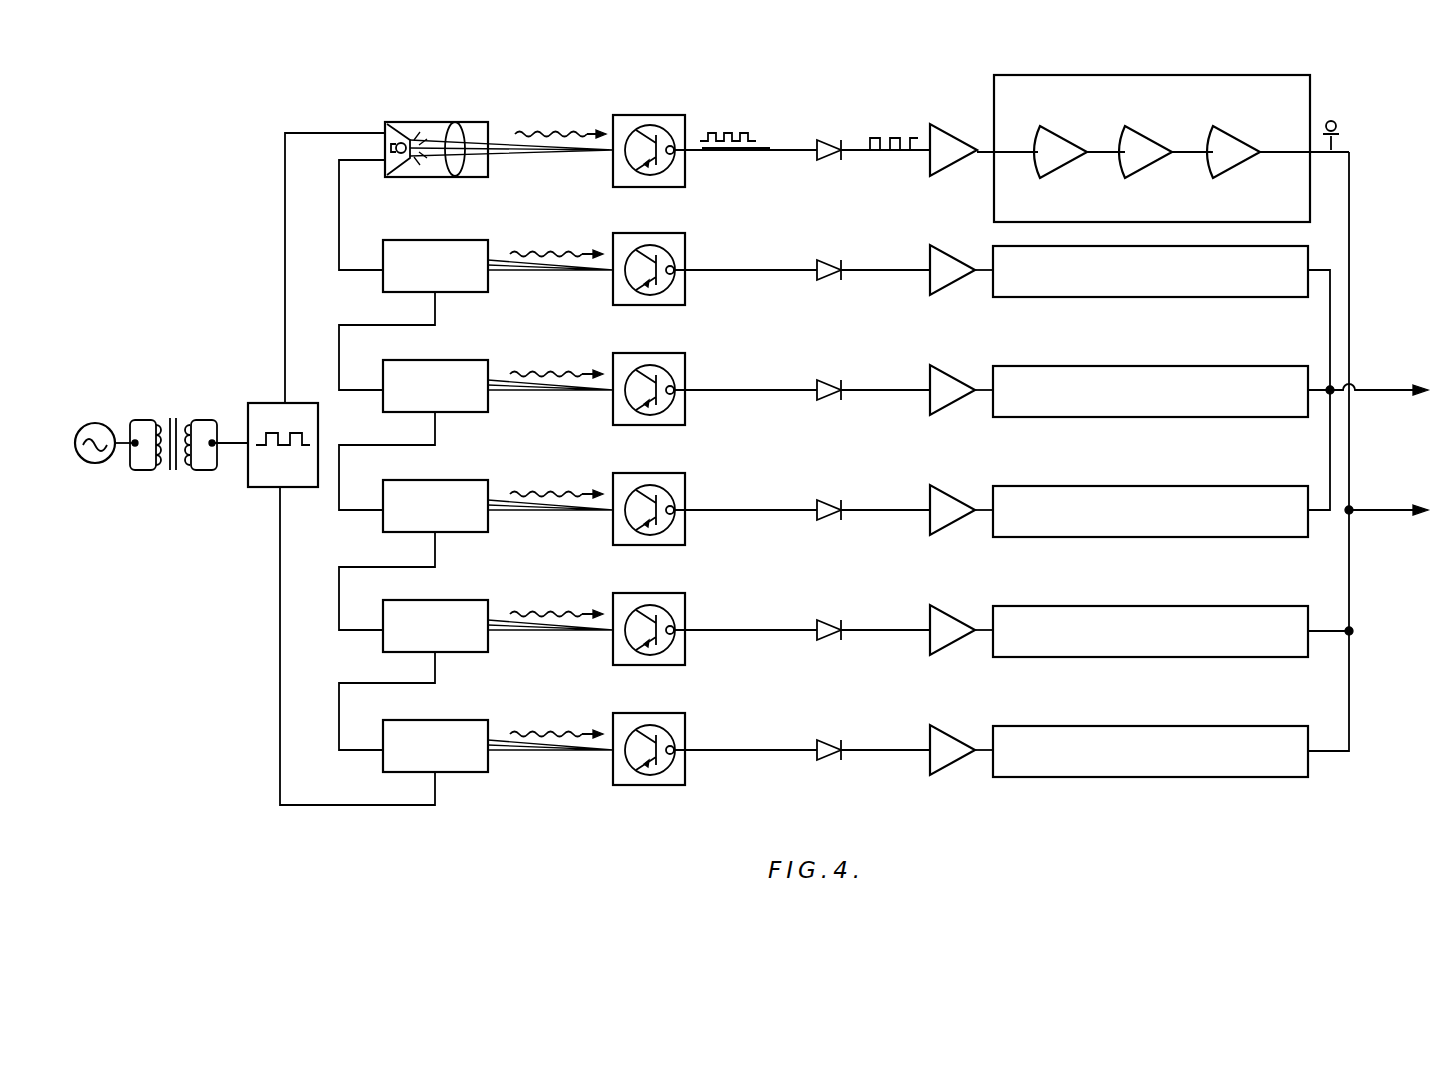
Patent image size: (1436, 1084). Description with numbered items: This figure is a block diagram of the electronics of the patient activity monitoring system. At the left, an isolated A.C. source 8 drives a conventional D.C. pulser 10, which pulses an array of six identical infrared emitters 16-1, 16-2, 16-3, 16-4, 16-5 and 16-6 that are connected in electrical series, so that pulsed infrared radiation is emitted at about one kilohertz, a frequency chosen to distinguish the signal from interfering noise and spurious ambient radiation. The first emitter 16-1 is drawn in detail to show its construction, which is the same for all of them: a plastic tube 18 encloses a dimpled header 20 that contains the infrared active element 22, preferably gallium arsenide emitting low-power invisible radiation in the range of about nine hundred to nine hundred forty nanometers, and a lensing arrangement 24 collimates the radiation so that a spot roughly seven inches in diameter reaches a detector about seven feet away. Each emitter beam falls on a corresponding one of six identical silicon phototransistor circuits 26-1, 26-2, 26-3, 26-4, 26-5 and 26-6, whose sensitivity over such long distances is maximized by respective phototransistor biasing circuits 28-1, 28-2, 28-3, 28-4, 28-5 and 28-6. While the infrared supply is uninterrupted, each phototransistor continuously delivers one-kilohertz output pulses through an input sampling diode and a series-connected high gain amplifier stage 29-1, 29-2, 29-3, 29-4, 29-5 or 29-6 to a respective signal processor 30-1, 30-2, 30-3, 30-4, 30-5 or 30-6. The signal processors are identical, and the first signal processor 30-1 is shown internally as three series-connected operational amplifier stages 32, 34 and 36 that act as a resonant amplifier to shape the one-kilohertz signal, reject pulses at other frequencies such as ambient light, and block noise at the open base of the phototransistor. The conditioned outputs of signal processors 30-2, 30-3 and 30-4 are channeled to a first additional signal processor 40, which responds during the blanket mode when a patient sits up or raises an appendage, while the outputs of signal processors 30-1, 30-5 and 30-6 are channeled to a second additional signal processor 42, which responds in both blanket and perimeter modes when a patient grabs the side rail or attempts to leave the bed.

The isolated A.C. source 8 is at (95, 463).
The D.C. pulser 10 is at (258, 487).
The emitter 16-1 is at (473, 120).
The emitter 16-2 is at (435, 266).
The emitter 16-3 is at (435, 386).
The emitter 16-4 is at (435, 506).
The emitter 16-5 is at (435, 626).
The emitter 16-6 is at (435, 746).
The plastic tube 18 is at (436, 178).
The dimpled header 20 is at (393, 170).
The infrared active element 22 is at (406, 131).
The lensing arrangement 24 is at (458, 165).
The silicon phototransistor circuit 26-1 is at (640, 155).
The silicon phototransistor circuit 26-2 is at (635, 275).
The silicon phototransistor circuit 26-3 is at (635, 395).
The silicon phototransistor circuit 26-4 is at (635, 515).
The silicon phototransistor circuit 26-5 is at (635, 635).
The silicon phototransistor circuit 26-6 is at (635, 755).
The phototransistor biasing circuit 28-1 is at (664, 115).
The phototransistor biasing circuit 28-2 is at (735, 230).
The phototransistor biasing circuit 28-3 is at (735, 350).
The phototransistor biasing circuit 28-4 is at (735, 470).
The phototransistor biasing circuit 28-5 is at (735, 594).
The phototransistor biasing circuit 28-6 is at (735, 708).
The high gain amplifier stage 29-1 is at (945, 124).
The high gain amplifier stage 29-2 is at (955, 232).
The high gain amplifier stage 29-3 is at (960, 345).
The high gain amplifier stage 29-4 is at (965, 470).
The high gain amplifier stage 29-5 is at (955, 588).
The high gain amplifier stage 29-6 is at (955, 705).
The signal processor 30-1 is at (1112, 75).
The signal processor 30-2 is at (1150, 271).
The signal processor 30-3 is at (1150, 391).
The signal processor 30-4 is at (1150, 511).
The signal processor 30-5 is at (1150, 631).
The signal processor 30-6 is at (1150, 751).
The operational amplifier stage 32 is at (1058, 130).
The operational amplifier stage 34 is at (1150, 130).
The operational amplifier stage 36 is at (1240, 130).
The first additional signal processor 40 is at (1413, 390).
The second additional signal processor 42 is at (1395, 518).